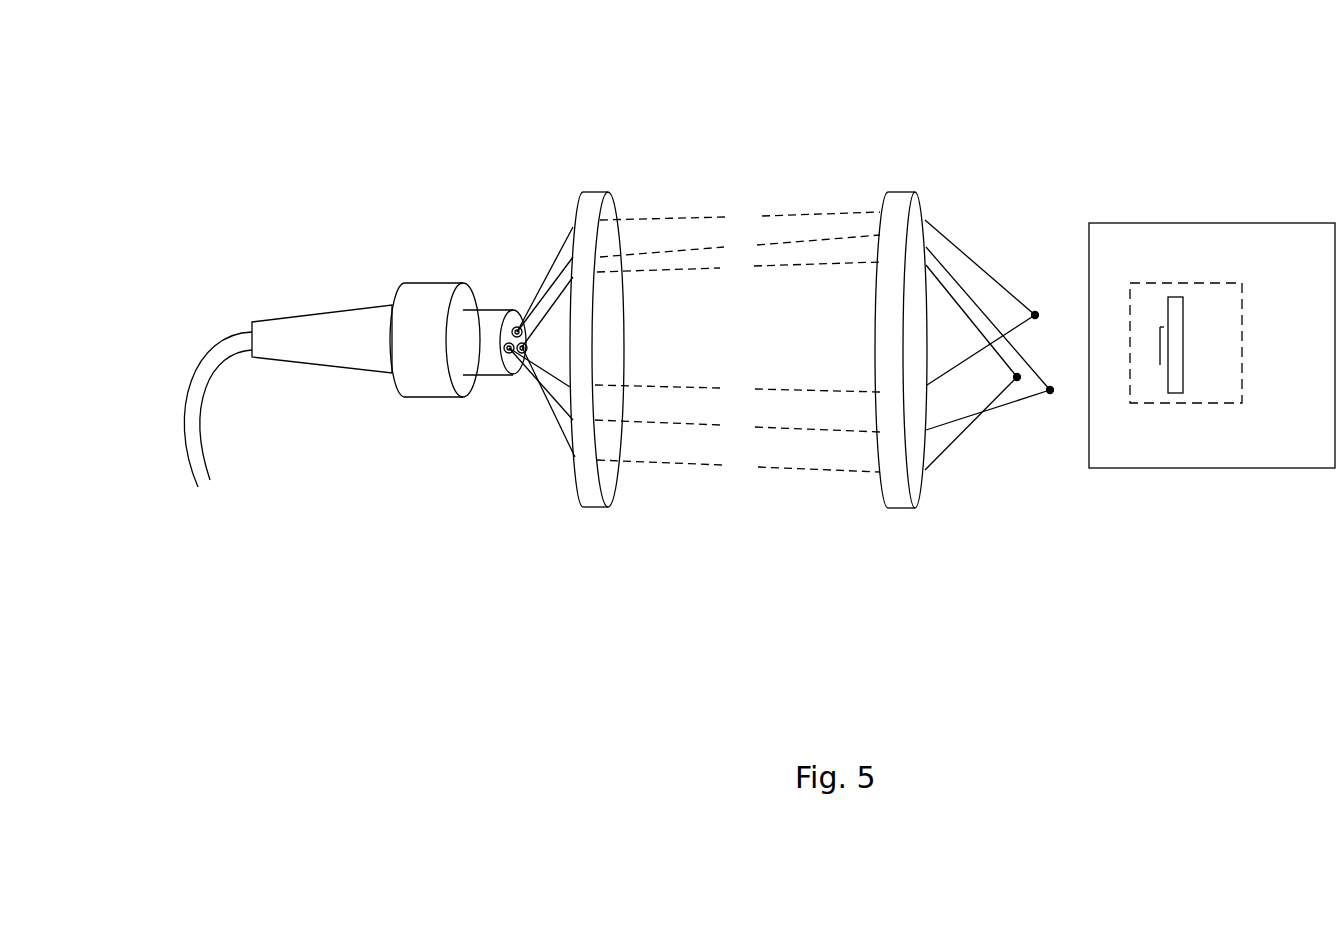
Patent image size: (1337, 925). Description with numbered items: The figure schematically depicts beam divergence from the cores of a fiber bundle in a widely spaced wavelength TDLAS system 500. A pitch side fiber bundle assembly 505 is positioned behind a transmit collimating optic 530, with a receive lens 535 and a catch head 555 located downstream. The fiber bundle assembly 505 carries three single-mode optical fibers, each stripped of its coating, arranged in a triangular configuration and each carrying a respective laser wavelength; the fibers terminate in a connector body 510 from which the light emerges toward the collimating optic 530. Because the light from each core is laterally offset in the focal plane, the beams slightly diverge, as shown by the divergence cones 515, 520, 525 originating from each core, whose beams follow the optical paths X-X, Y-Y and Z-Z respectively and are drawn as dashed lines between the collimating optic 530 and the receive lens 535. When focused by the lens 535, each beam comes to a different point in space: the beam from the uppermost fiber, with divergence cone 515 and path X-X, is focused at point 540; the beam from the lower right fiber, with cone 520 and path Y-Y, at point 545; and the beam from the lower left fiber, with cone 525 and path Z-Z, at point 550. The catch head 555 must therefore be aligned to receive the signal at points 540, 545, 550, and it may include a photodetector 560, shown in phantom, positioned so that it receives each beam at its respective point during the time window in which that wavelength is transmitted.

The widely spaced wavelength TDLAS system 500 is at (1076, 698).
The pitch side fiber bundle assembly 505 is at (344, 457).
The fiber connector 510 is at (487, 308).
The divergence cone 515 is at (572, 305).
The divergence cone 520 is at (540, 300).
The divergence cone 525 is at (560, 300).
The transmit collimating optic 530 is at (593, 192).
The receive lens 535 is at (898, 510).
The point 540 is at (1037, 313).
The point 545 is at (1052, 392).
The point 550 is at (1017, 380).
The catch head 555 is at (1322, 251).
The photodetector 560 is at (1213, 404).